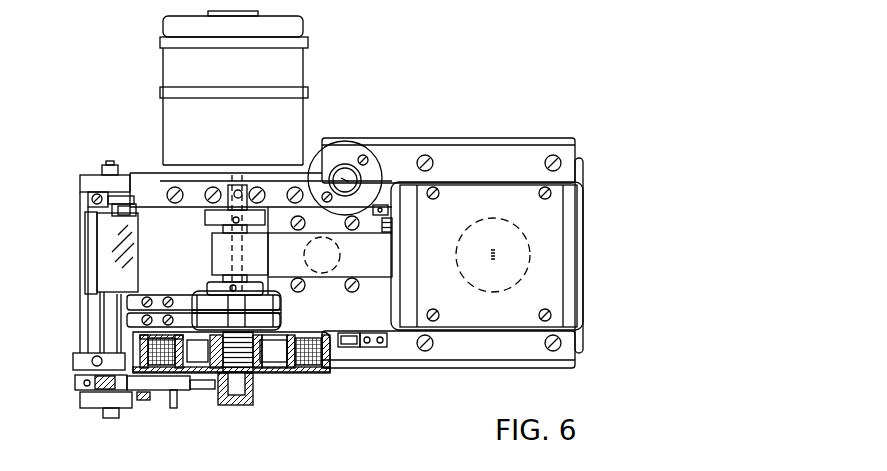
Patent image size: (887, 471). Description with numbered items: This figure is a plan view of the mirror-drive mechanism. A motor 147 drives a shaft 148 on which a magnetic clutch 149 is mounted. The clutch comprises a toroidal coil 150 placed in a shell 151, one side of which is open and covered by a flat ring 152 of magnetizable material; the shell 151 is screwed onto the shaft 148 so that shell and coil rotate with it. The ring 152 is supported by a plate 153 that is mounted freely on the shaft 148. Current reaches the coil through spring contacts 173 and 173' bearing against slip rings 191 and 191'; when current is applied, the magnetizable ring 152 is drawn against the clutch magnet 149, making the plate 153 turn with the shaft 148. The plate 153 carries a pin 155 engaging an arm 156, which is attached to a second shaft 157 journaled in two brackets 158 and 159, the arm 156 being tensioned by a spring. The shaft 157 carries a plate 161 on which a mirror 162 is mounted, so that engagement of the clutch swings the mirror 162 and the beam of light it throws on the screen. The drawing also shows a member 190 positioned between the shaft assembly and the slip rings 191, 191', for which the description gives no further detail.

The motor 147 is at (300, 66).
The shaft 148 is at (228, 248).
The magnetic clutch 149 is at (277, 372).
The toroidal coil 150 is at (323, 376).
The shell 151 is at (325, 352).
The flat ring 152 is at (280, 358).
The plate 153 is at (265, 372).
The pin 155 is at (168, 398).
The arm 156 is at (197, 392).
The shaft 157 is at (108, 340).
The bracket 158 is at (97, 403).
The bracket 159 is at (93, 180).
The plate 161 is at (100, 218).
The mirror 162 is at (107, 263).
The spring contact 173 is at (156, 324).
The spring contact 173' is at (156, 299).
The plate 190 is at (233, 288).
The slip ring 191 is at (266, 312).
The slip ring 191' is at (269, 305).